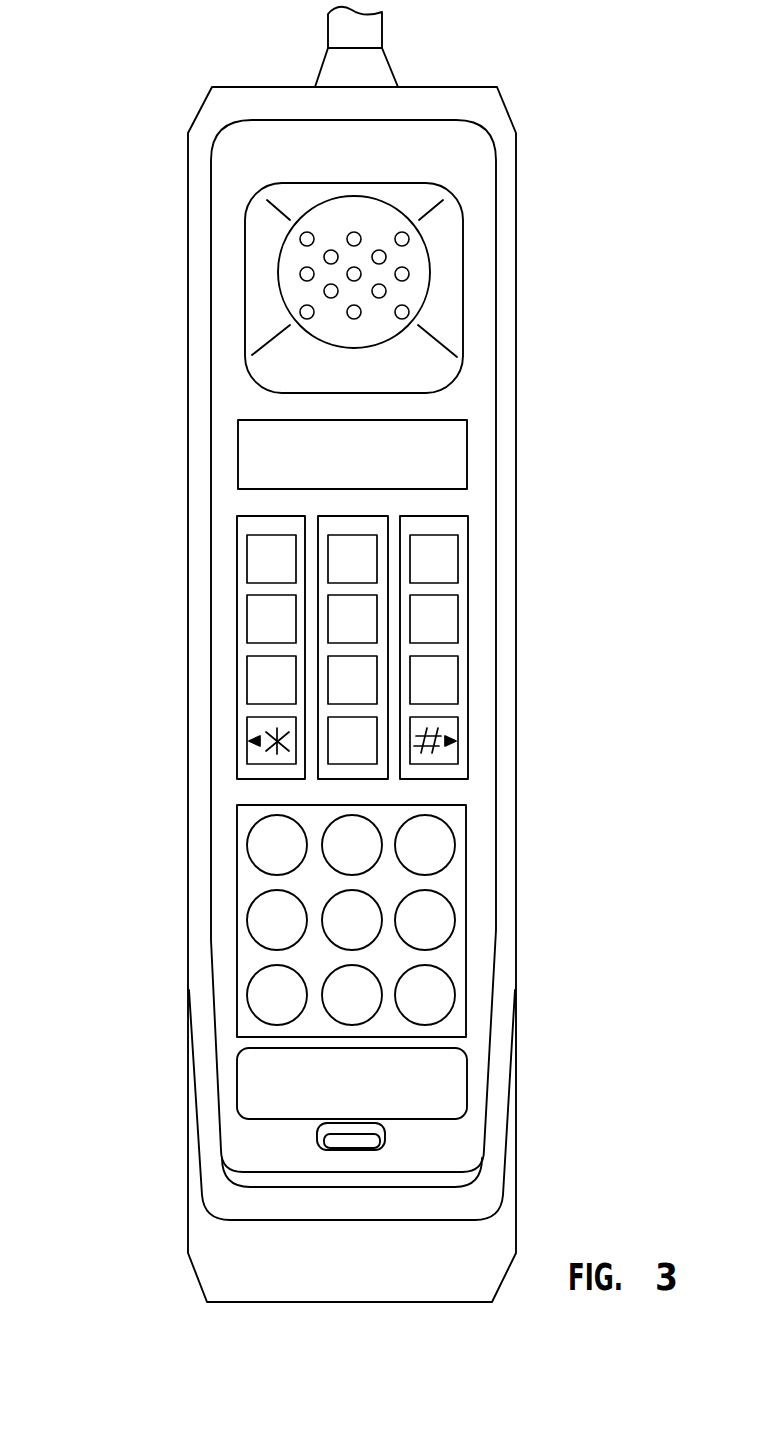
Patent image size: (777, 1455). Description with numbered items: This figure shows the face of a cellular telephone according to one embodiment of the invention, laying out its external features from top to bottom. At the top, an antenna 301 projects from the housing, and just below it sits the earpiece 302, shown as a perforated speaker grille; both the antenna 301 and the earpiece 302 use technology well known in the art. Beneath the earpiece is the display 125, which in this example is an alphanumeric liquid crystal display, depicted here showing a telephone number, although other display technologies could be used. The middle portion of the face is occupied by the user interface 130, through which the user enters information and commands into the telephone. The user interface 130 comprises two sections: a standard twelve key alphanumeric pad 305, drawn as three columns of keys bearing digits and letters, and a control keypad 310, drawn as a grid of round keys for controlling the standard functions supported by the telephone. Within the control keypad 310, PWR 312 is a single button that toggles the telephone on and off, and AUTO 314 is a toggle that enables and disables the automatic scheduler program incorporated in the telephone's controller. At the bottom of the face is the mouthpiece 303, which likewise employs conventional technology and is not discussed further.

The antenna 301 is at (328, 33).
The earpiece 302 is at (258, 280).
The display 125 is at (253, 453).
The user interface 130 is at (93, 512).
The twelve key alphanumeric pad 305 is at (176, 778).
The control keypad 310 is at (346, 920).
The PWR 312 is at (455, 843).
The AUTO 314 is at (455, 995).
The mouthpiece 303 is at (247, 1152).